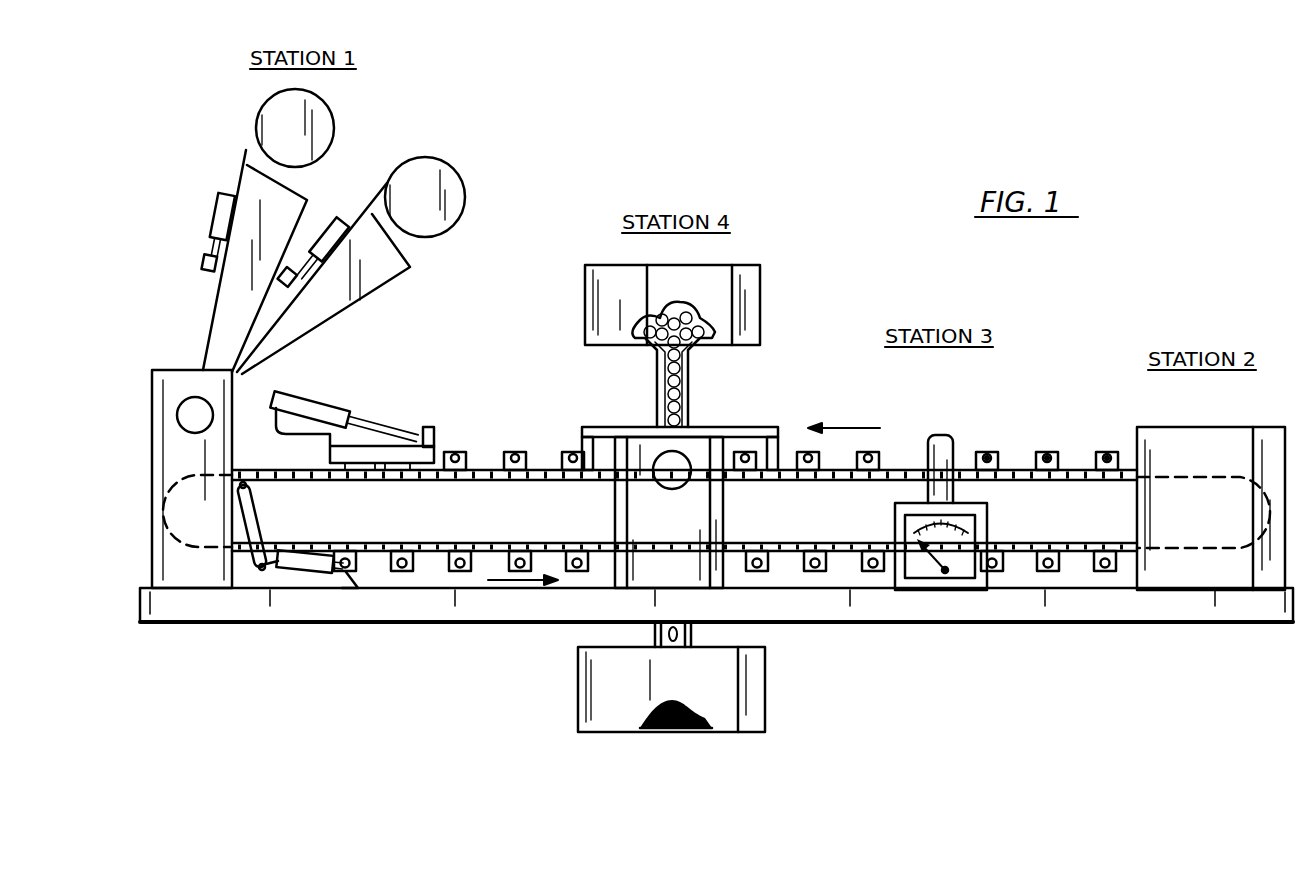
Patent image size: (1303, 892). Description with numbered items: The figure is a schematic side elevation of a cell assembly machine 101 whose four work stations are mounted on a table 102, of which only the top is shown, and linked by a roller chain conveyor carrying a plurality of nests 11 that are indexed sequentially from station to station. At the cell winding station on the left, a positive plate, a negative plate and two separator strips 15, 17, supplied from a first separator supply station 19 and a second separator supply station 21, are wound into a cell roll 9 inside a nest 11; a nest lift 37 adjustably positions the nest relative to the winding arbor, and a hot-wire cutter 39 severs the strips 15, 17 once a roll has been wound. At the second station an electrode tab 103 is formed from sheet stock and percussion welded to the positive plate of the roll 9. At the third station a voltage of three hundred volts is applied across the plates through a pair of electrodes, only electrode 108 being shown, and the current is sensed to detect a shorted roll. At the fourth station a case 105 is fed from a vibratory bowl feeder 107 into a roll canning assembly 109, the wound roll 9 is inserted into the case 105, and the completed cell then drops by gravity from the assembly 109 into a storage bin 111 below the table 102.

The cell roll 9 is at (400, 567).
The nest 11 is at (472, 448).
The separator strip 15 is at (247, 150).
The separator strip 17 is at (387, 183).
The first separator supply station 19 is at (200, 210).
The second separator supply station 21 is at (319, 220).
The nest lift 37 is at (292, 597).
The hot-wire cutter 39 is at (352, 392).
The cell assembly machine 101 is at (754, 406).
The table 102 is at (958, 605).
The electrode tab 103 is at (990, 452).
The case 105 is at (684, 370).
The vibratory bowl feeder 107 is at (745, 297).
The electrode 108 is at (942, 437).
The roll canning assembly 109 is at (686, 537).
The storage bin 111 is at (758, 699).